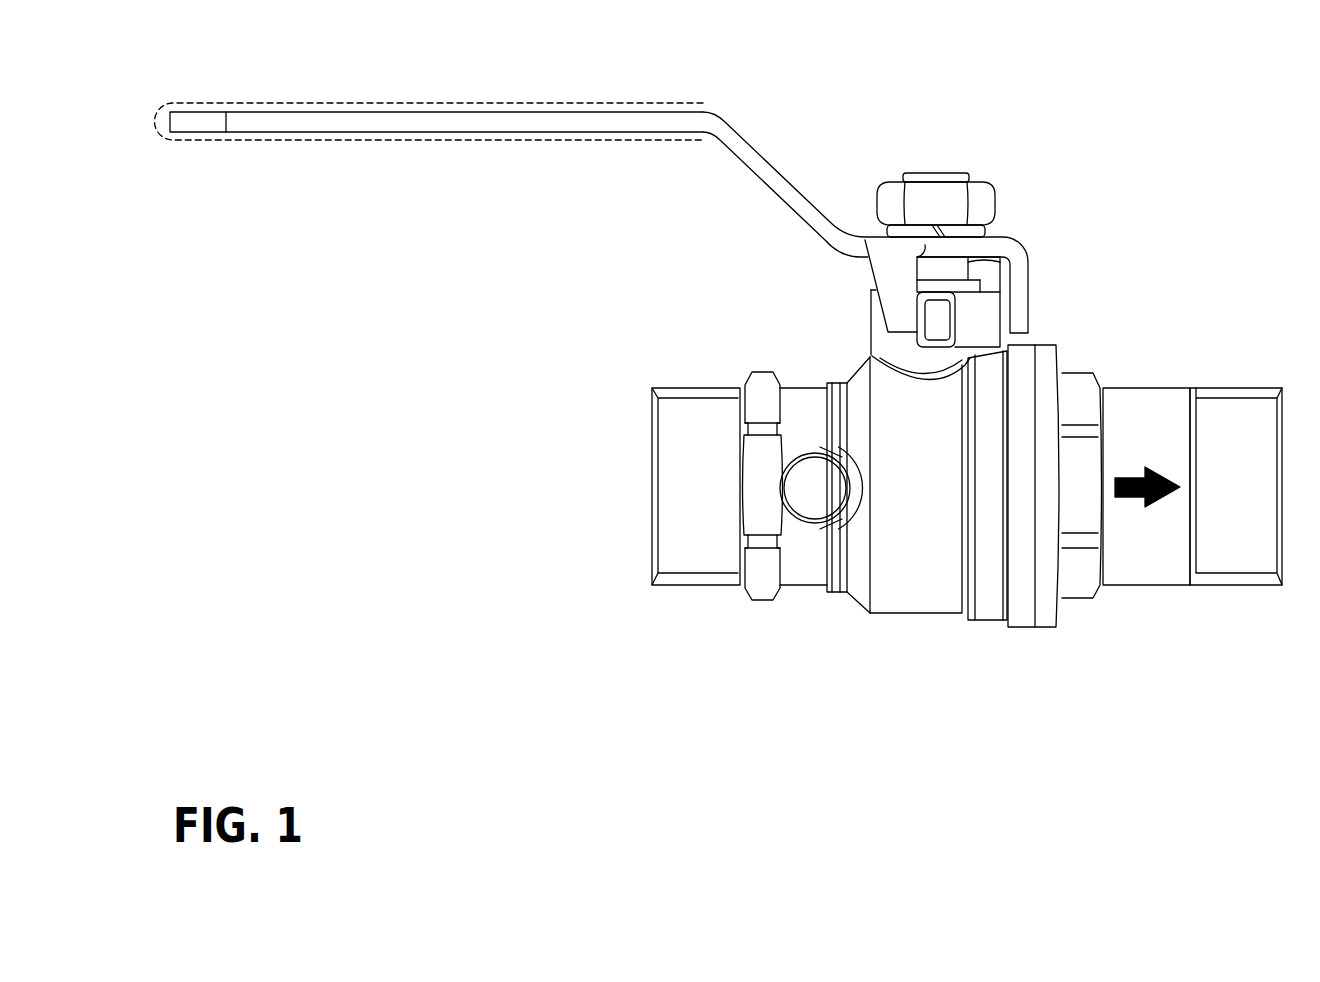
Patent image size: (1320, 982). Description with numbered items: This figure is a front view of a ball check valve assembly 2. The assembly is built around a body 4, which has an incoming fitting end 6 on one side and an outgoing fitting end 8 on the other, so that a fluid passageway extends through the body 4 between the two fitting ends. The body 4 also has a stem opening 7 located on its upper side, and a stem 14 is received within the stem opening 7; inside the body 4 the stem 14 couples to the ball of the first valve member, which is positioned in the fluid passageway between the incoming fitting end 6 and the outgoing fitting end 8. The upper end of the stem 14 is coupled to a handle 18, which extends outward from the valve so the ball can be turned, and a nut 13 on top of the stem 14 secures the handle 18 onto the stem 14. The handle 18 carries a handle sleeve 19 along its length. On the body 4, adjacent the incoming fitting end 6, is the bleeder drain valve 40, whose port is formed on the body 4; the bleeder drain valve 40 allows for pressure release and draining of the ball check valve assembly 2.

The ball check valve assembly 2 is at (967, 426).
The body 4 is at (963, 417).
The incoming fitting end 6 is at (708, 582).
The stem opening 7 is at (903, 347).
The outgoing fitting end 8 is at (1227, 582).
The nut 13 is at (996, 205).
The stem 14 is at (939, 173).
The handle 18 is at (548, 118).
The handle sleeve 19 is at (446, 103).
The bleeder drain valve 40 is at (817, 497).